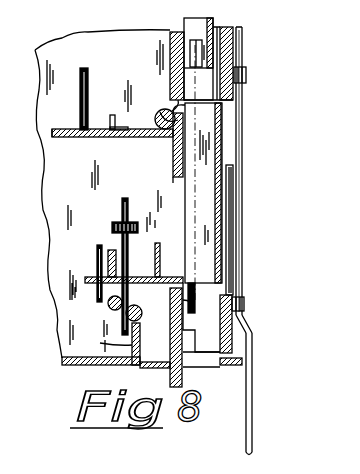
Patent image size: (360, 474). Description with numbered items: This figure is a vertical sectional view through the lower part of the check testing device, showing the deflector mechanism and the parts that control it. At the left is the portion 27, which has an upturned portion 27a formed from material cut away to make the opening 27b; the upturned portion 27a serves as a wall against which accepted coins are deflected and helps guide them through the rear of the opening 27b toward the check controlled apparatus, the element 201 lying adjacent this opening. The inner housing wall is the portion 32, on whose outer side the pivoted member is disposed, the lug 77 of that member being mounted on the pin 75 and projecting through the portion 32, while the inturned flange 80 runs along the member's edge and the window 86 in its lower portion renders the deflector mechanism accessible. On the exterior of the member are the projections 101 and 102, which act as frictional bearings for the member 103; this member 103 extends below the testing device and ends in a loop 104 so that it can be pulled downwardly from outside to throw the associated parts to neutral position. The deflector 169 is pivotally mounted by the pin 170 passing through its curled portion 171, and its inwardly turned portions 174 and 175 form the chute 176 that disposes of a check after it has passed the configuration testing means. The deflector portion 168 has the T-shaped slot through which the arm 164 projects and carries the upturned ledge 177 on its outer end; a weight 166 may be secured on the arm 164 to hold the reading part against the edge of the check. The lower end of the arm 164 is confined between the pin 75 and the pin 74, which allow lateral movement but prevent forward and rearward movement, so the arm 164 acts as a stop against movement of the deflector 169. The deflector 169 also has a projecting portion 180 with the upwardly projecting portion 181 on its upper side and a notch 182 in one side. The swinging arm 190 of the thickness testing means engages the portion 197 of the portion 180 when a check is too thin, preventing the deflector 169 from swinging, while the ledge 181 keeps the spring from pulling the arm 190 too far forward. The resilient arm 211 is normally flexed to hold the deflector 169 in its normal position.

The portion 27 is at (72, 367).
The upturned portion 27a is at (100, 341).
The opening 27b is at (150, 366).
The plate end 201 is at (171, 380).
The portion of the inner housing 32 is at (177, 28).
The inturned flange 80 is at (243, 50).
The projection 101 is at (247, 73).
The member 103 is at (245, 108).
The loop 104 is at (253, 438).
The projection 102 is at (245, 303).
The portion of deflector 175 is at (220, 145).
The chute 176 is at (200, 206).
The portion of deflector 174 is at (217, 225).
The window 86 is at (226, 180).
The lug 77 is at (182, 330).
The portion of deflector 180 is at (113, 138).
The notch 182 is at (60, 137).
The portion of member 180 197 is at (42, 145).
The swinging arm 190 is at (90, 82).
The upwardly projecting portion 181 is at (118, 104).
The pin 170 is at (158, 107).
The curled portion 171 is at (167, 100).
The deflector 169 is at (168, 182).
The arm 164 is at (140, 230).
The weight 166 is at (119, 222).
The arm 211 is at (97, 256).
The upturned ledge 177 is at (109, 251).
The portion of deflector 168 is at (168, 250).
The pin 75 is at (136, 305).
The pin 74 is at (108, 305).